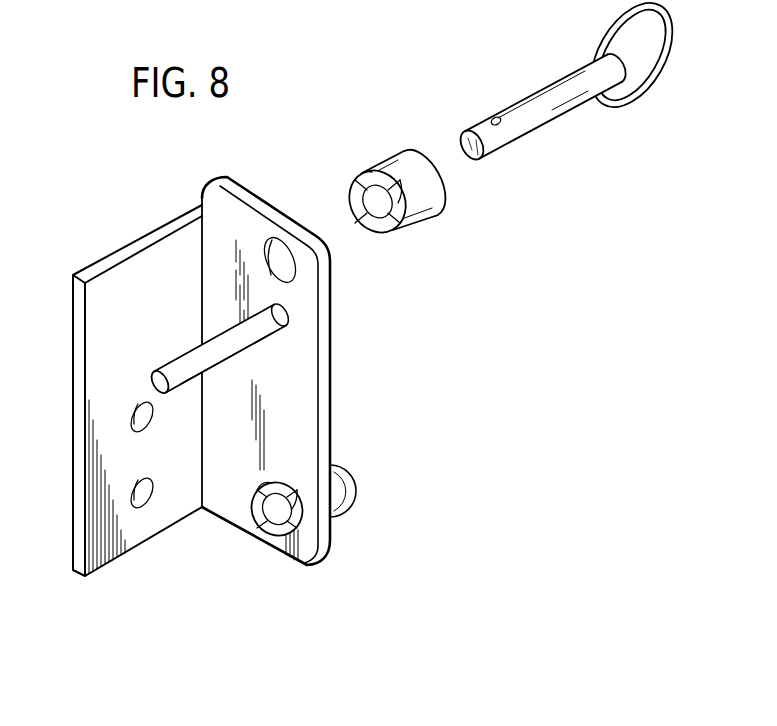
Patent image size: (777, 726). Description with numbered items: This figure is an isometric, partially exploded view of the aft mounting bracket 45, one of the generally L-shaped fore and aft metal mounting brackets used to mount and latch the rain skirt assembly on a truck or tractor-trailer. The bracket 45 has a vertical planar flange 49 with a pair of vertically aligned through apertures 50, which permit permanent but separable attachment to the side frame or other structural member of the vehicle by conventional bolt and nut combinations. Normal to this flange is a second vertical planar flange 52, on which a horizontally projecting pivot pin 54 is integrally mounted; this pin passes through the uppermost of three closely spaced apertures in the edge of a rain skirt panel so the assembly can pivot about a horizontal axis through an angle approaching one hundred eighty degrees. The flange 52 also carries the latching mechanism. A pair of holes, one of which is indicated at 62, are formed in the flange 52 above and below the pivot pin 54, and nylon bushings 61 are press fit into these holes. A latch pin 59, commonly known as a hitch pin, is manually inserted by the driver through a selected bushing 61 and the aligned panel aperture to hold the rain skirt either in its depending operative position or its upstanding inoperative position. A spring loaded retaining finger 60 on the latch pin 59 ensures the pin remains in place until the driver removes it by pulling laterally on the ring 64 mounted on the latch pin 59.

The aft mounting bracket 45 is at (184, 552).
The vertical planar flange 49 is at (103, 392).
The through apertures 50 is at (130, 497).
The second vertical planar flange 52 is at (305, 375).
The pivot pin 54 is at (257, 330).
The latch pin 59 is at (541, 93).
The spring loaded retaining finger 60 is at (493, 117).
The nylon bushing 61 is at (340, 492).
The hole 62 is at (298, 267).
The ring 64 is at (604, 35).